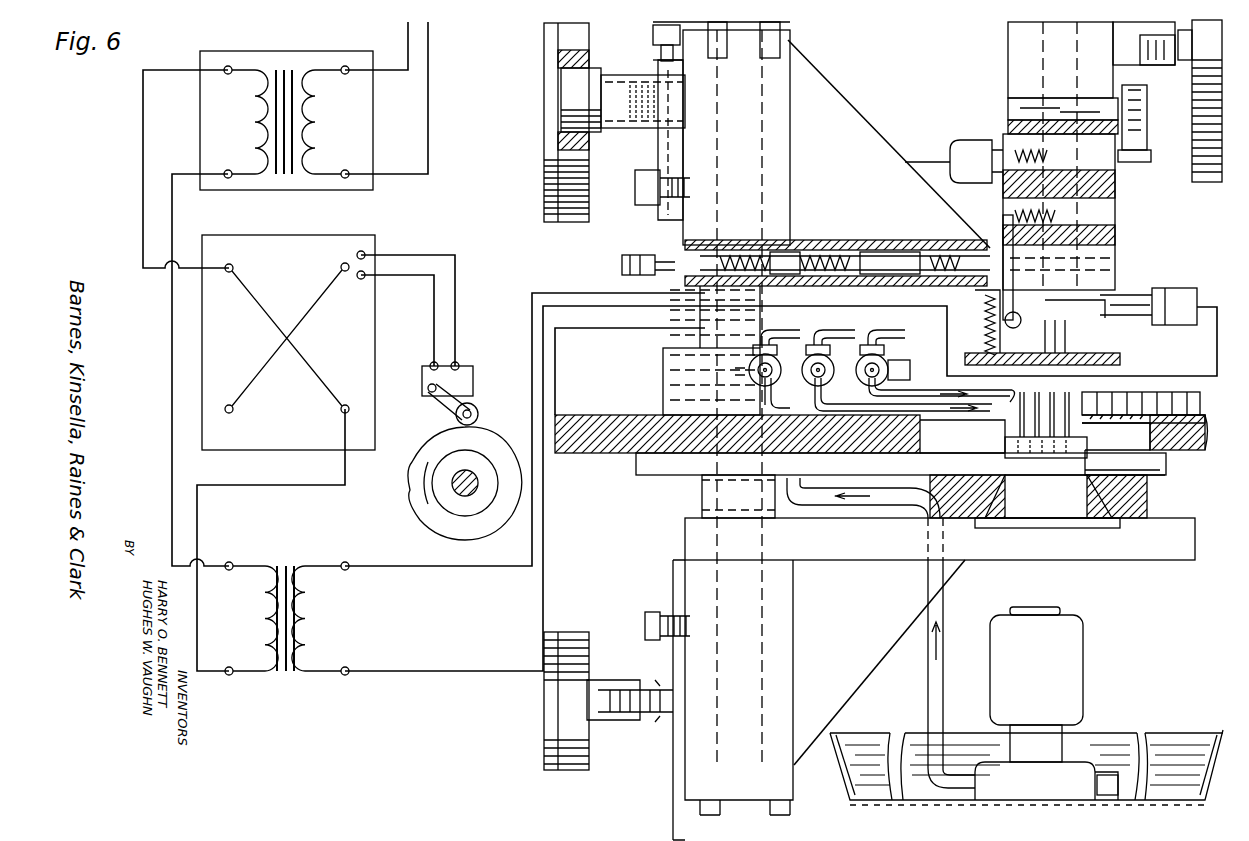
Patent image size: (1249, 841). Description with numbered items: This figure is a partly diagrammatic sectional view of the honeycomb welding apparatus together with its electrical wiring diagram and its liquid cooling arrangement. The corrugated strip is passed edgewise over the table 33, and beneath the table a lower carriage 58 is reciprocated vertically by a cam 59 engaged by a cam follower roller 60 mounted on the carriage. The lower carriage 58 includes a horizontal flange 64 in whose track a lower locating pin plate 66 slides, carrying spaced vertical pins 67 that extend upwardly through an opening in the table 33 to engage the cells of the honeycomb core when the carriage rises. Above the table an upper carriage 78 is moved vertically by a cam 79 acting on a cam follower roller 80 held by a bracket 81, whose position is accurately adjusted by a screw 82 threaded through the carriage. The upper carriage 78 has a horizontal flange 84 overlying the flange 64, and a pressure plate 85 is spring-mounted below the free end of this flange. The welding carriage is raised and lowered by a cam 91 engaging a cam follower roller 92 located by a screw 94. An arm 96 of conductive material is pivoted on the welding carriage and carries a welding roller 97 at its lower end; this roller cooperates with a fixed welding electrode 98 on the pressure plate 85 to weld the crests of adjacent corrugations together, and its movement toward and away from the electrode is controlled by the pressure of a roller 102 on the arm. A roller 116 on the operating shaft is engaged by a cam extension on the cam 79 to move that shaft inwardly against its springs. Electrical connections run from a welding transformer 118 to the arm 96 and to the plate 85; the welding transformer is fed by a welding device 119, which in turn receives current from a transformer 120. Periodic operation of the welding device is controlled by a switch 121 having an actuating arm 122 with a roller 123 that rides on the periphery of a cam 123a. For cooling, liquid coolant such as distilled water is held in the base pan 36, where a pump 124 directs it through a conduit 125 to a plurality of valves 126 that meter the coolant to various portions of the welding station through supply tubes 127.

The table 33 is at (1176, 450).
The base pan 36 is at (1165, 735).
The lower carriage 58 is at (790, 598).
The cam 59 is at (572, 632).
The cam follower roller 60 is at (594, 680).
The horizontal flange 64 is at (880, 552).
The lower locating pin plate 66 is at (1038, 482).
The pins 67 is at (1020, 425).
The upper carriage 78 is at (775, 140).
The cam 79 is at (560, 224).
The cam follower roller 80 is at (580, 72).
The bracket 81 is at (622, 82).
The screw 82 is at (655, 47).
The horizontal flange 84 is at (878, 240).
The pressure plate 85 is at (1118, 358).
The cam 91 is at (1192, 130).
The cam follower roller 92 is at (1150, 66).
The screw 94 is at (1138, 152).
The arm 96 is at (1000, 185).
The welding roller 97 is at (985, 325).
The welding electrode 98 is at (1032, 392).
The roller 102 is at (980, 230).
The roller 116 is at (620, 264).
The welding transformer 118 is at (297, 680).
The welding device 119 is at (276, 246).
The transformer 120 is at (352, 182).
The switch 121 is at (462, 372).
The actuating arm 122 is at (440, 403).
The roller 123 is at (476, 404).
The cam 123a is at (470, 522).
The pump 124 is at (1070, 675).
The conduit 125 is at (940, 608).
The valves 126 is at (850, 312).
The supply tubes 127 is at (856, 388).